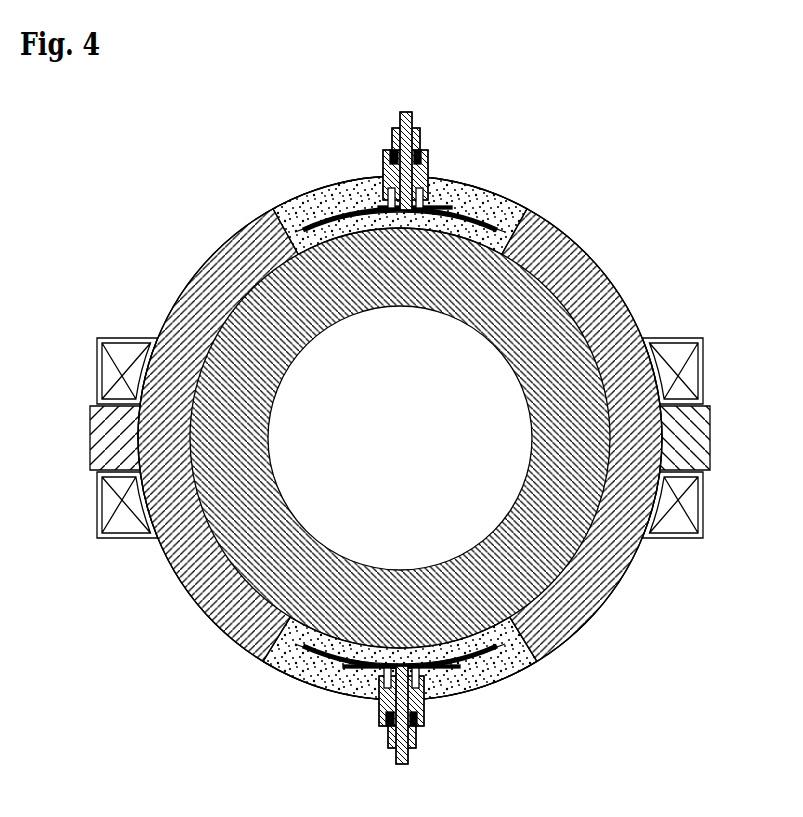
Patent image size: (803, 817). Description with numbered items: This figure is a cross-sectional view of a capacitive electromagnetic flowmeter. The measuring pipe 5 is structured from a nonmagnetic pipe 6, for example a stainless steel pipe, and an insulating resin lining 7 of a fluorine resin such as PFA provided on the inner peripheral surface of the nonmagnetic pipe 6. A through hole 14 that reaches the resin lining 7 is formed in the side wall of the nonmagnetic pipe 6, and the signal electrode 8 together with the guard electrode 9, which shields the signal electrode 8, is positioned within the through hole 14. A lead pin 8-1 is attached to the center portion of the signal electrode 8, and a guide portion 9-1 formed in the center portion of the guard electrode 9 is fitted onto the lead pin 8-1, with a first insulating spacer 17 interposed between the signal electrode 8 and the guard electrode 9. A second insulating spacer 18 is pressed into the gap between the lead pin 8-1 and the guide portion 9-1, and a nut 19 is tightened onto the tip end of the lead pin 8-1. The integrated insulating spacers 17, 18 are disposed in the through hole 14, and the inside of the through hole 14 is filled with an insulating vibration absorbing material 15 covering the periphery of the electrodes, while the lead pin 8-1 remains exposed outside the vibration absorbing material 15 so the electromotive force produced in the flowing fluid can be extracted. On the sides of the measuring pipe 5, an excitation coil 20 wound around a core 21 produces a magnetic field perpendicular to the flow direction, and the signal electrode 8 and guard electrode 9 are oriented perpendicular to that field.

The measuring pipe 5 is at (684, 246).
The nonmagnetic pipe 6 is at (587, 275).
The resin lining 7 is at (576, 355).
The signal electrode 8 is at (358, 228).
The lead pin 8-1 is at (413, 122).
The guard electrode 9 is at (462, 200).
The guide portion 9-1 is at (427, 172).
The through hole 14 is at (522, 235).
The vibration absorbing material 15 is at (303, 200).
The first insulating spacer 17 is at (340, 222).
The second insulating spacer 18 is at (392, 152).
The nut 19 is at (400, 127).
The excitation coil 20 is at (113, 369).
The core 21 is at (110, 428).